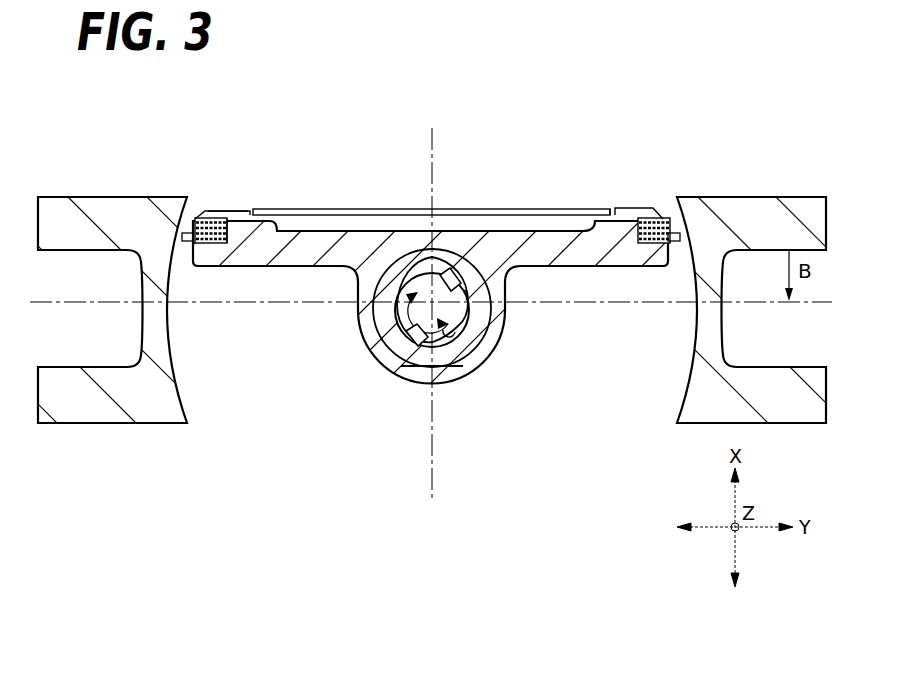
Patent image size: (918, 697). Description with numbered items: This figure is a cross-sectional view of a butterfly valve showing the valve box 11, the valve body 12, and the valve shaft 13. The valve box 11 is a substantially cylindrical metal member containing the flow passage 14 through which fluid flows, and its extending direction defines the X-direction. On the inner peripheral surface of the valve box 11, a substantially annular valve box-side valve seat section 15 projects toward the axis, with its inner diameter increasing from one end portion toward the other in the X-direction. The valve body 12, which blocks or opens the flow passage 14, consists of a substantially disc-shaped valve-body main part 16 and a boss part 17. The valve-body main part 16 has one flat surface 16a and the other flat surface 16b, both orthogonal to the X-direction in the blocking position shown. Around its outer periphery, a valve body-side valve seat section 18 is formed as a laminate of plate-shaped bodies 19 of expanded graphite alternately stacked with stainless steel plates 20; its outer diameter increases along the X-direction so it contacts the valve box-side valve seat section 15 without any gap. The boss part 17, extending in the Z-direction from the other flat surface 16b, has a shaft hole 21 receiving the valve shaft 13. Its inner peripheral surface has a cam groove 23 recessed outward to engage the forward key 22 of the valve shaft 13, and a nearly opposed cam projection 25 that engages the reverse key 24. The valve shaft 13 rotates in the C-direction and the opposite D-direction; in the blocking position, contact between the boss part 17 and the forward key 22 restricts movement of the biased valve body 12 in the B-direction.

The valve box 11 is at (113, 197).
The valve body 12 is at (347, 200).
The valve shaft 13 is at (468, 317).
The flow passage 14 is at (200, 232).
The valve box-side valve seat section 15 is at (207, 203).
The valve-body main part 16 is at (548, 212).
The one flat surface 16a is at (605, 209).
The other flat surface 16b is at (635, 267).
The boss part 17 is at (490, 333).
The valve body-side valve seat section 18 is at (236, 203).
The plate-shaped bodies 19 is at (198, 238).
The stainless steel plates 20 is at (227, 232).
The shaft hole 21 is at (468, 298).
The forward key 22 is at (459, 272).
The cam groove 23 is at (437, 256).
The reverse key 24 is at (418, 340).
The cam projection 25 is at (453, 340).